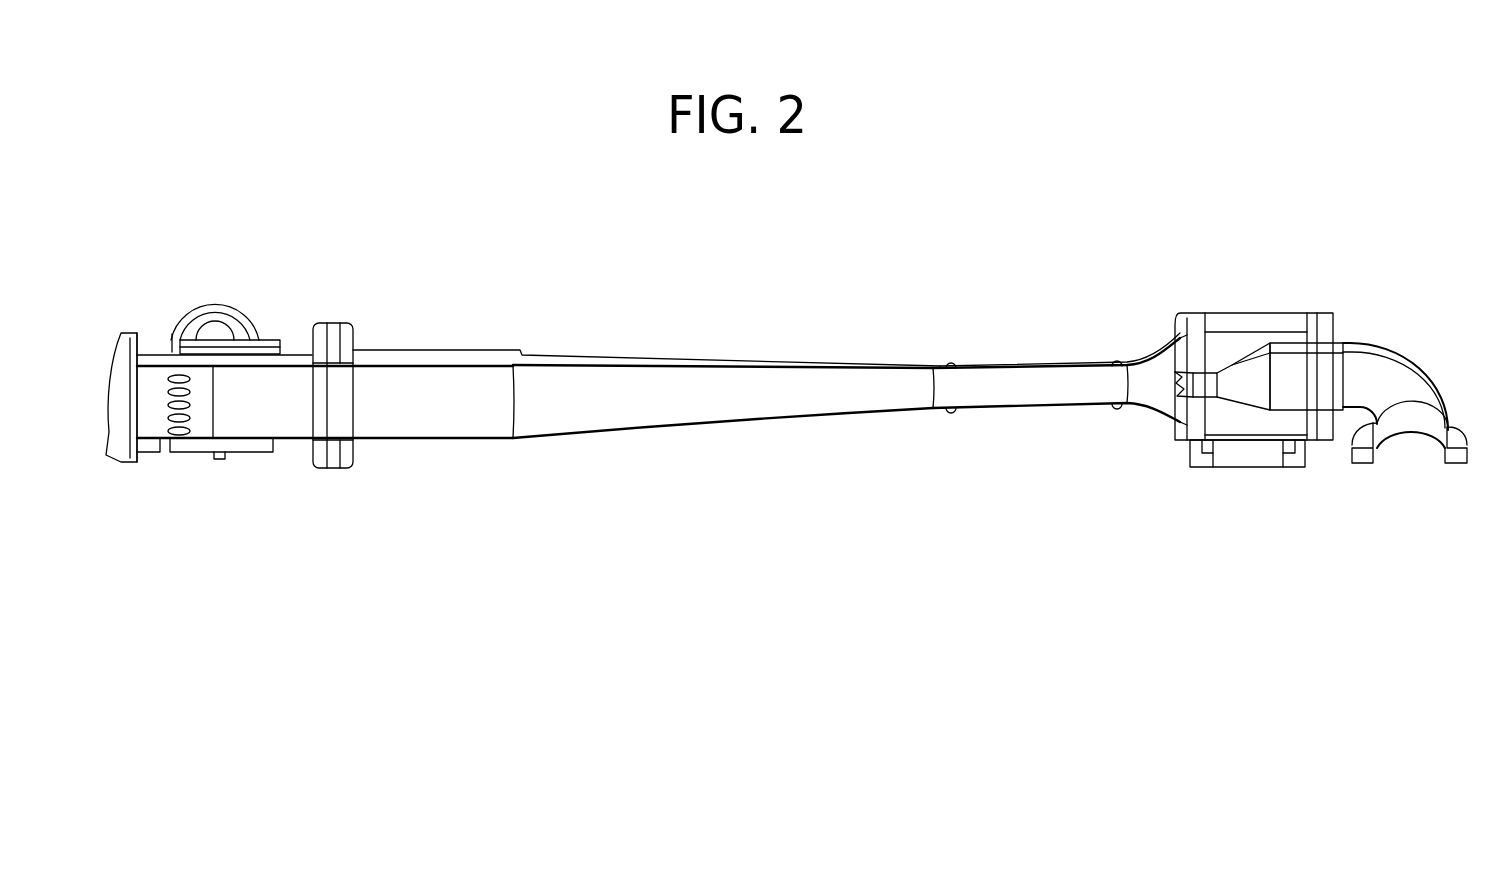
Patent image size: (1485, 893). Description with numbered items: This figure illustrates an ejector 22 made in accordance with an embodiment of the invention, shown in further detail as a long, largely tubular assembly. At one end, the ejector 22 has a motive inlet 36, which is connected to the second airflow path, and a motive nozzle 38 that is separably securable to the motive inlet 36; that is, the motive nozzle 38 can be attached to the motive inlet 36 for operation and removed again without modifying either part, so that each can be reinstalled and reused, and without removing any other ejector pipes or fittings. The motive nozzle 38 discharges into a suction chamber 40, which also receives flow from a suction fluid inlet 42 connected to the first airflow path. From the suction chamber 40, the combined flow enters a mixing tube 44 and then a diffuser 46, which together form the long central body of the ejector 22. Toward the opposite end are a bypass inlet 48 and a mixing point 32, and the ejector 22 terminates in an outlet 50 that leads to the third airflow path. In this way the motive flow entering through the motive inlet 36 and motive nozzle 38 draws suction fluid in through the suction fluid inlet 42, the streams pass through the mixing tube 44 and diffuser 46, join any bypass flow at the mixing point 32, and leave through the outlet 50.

The ejector 22 is at (371, 205).
The mixing point 32 is at (203, 412).
The motive inlet 36 is at (1412, 462).
The motive nozzle 38 is at (1171, 401).
The suction chamber 40 is at (1228, 311).
The suction fluid inlet 42 is at (1242, 463).
The mixing tube 44 is at (1010, 350).
The diffuser 46 is at (692, 348).
The bypass inlet 48 is at (241, 298).
The outlet 50 is at (113, 434).